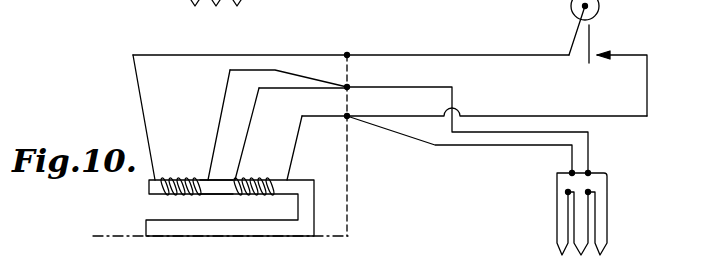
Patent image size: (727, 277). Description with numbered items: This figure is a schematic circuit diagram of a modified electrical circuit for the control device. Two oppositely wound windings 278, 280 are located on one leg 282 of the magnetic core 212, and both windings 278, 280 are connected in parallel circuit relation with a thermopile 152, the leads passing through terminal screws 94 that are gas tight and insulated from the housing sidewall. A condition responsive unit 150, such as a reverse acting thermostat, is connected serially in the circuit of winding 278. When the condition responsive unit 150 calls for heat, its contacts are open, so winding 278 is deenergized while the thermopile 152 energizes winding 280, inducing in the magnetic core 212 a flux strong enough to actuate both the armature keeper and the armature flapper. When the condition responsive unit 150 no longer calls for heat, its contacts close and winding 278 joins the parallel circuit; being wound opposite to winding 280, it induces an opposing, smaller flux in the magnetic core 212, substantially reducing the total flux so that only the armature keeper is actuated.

The terminal screw 94 is at (349, 56).
The condition responsive unit 150 is at (629, 48).
The thermopile 152 is at (636, 226).
The magnetic core 212 is at (309, 204).
The winding 278 is at (188, 177).
The winding 280 is at (246, 178).
The leg 282 is at (224, 189).